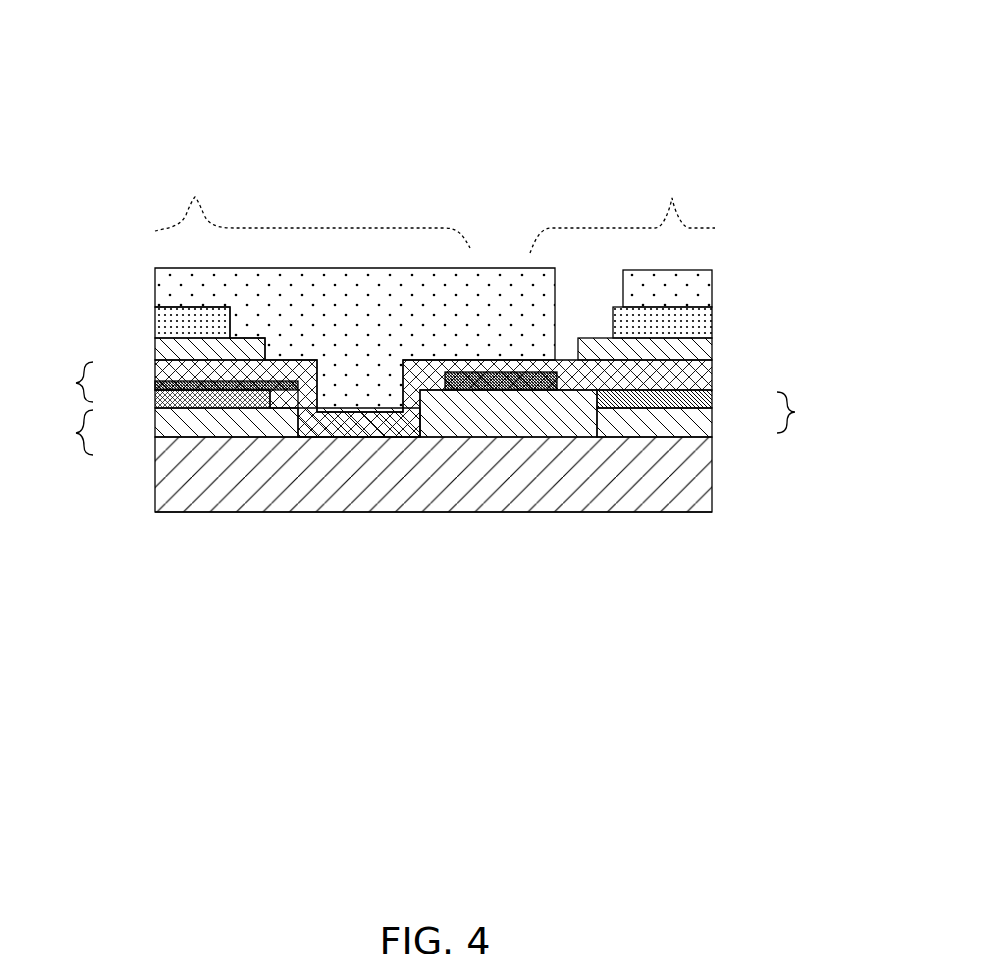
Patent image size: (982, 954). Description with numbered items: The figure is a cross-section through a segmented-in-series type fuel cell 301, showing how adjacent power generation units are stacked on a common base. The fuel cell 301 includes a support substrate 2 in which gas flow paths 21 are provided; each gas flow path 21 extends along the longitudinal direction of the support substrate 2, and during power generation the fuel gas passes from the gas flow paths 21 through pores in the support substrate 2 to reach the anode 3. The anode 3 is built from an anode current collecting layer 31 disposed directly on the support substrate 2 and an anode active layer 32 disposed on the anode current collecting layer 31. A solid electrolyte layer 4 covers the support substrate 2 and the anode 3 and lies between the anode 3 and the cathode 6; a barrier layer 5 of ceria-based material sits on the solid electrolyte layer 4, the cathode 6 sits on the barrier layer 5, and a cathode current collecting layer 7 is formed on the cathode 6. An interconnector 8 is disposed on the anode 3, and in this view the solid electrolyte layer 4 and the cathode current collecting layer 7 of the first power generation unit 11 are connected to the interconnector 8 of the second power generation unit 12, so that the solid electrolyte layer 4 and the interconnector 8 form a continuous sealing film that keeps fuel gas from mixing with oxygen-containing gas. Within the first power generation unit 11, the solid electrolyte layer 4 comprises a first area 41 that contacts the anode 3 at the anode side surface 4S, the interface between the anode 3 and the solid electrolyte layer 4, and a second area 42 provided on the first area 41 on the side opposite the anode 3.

The fuel cell 301 is at (305, 88).
The support substrate 2 is at (697, 486).
The gas flow path 21 is at (403, 584).
The anode 3 is at (435, 423).
The anode current collecting layer 31 is at (162, 424).
The anode active layer 32 is at (162, 401).
The solid electrolyte layer 4 is at (745, 366).
The first area 41 is at (162, 386).
The second area 42 is at (162, 372).
The anode side surface 4S is at (288, 390).
The barrier layer 5 is at (162, 351).
The cathode 6 is at (162, 322).
The cathode current collecting layer 7 is at (165, 285).
The interconnector 8 is at (500, 392).
The first power generation unit 11 is at (195, 197).
The second power generation unit 12 is at (672, 198).